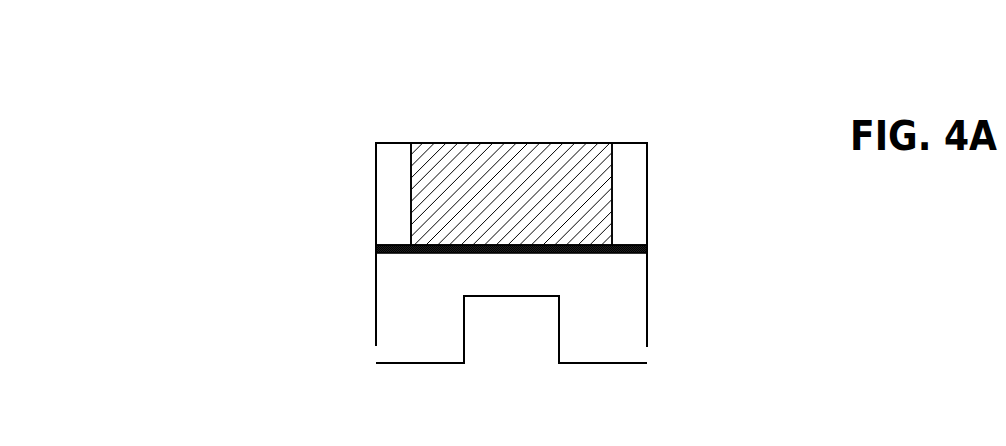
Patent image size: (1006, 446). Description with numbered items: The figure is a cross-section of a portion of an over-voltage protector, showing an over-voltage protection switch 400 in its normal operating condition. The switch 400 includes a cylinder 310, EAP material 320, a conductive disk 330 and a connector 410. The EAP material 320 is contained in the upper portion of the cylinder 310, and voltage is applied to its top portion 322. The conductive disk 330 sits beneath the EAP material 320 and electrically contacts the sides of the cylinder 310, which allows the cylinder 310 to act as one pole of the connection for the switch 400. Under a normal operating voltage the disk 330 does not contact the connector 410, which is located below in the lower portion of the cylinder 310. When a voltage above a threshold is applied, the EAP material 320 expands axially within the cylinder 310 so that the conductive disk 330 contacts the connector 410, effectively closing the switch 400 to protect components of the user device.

The over-voltage protection switch 400 is at (251, 63).
The cylinder 310 is at (373, 219).
The EAP material 320 is at (516, 166).
The top portion of EAP material 322 is at (392, 141).
The conductive disk 330 is at (647, 256).
The connector 410 is at (460, 341).